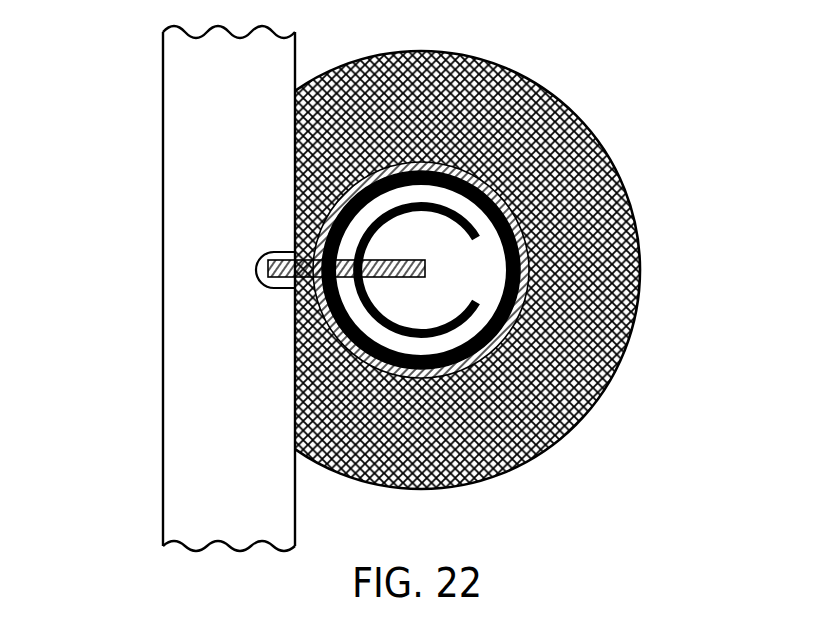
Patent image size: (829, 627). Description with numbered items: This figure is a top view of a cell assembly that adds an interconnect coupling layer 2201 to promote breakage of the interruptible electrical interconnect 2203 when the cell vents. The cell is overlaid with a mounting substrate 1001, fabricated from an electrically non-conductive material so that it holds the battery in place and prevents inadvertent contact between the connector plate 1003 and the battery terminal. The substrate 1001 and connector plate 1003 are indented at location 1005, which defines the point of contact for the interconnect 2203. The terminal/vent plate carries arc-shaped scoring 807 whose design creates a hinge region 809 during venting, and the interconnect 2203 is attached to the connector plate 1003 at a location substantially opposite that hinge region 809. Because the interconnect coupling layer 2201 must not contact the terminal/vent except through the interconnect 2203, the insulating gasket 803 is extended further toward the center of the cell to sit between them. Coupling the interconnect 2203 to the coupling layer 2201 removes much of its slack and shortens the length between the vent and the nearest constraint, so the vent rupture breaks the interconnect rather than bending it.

The scoring 807 is at (457, 208).
The interconnect coupling layer 2201 is at (503, 213).
The hinge region 809 is at (486, 268).
The insulating gasket 803 is at (480, 342).
The mounting substrate 1001 is at (433, 440).
The indented location 1005 is at (279, 244).
The interruptible electrical interconnect 2203 is at (317, 300).
The connector plate 1003 is at (230, 512).